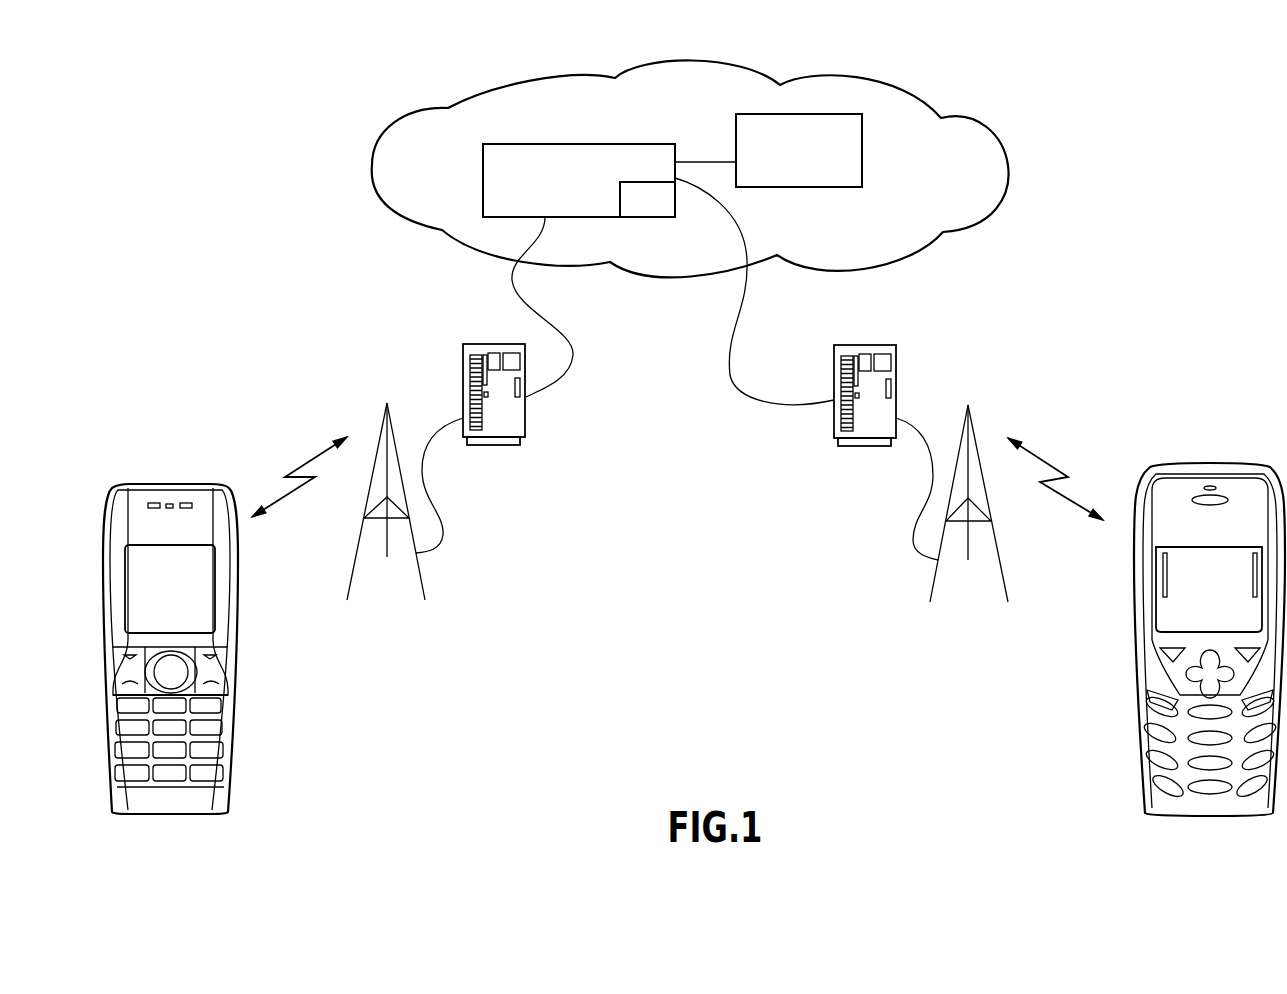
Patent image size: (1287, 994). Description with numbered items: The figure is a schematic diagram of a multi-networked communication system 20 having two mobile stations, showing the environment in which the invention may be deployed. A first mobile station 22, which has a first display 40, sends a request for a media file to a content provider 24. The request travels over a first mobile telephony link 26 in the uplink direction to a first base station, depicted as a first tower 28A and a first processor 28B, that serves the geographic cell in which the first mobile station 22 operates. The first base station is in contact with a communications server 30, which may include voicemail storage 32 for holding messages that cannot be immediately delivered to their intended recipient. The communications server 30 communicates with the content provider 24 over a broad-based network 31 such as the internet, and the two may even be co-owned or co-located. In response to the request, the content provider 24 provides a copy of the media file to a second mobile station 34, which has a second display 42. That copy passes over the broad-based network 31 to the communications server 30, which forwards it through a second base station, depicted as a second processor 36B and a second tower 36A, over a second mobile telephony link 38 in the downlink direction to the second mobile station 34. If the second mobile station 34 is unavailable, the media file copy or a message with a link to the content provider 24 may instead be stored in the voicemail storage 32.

The multi-networked communication system 20 is at (506, 735).
The first mobile station 22 is at (256, 665).
The content provider 24 is at (864, 138).
The first mobile telephony link 26 is at (300, 465).
The first tower 28A is at (422, 582).
The first processor 28B is at (500, 447).
The communications server 30 is at (483, 165).
The broad-based network 31 is at (418, 122).
The voicemail storage 32 is at (643, 218).
The second mobile station 34 is at (1230, 463).
The second tower 36A is at (932, 588).
The second processor 36B is at (855, 448).
The second mobile telephony link 38 is at (1057, 463).
The first display 40 is at (202, 593).
The second display 42 is at (1177, 588).